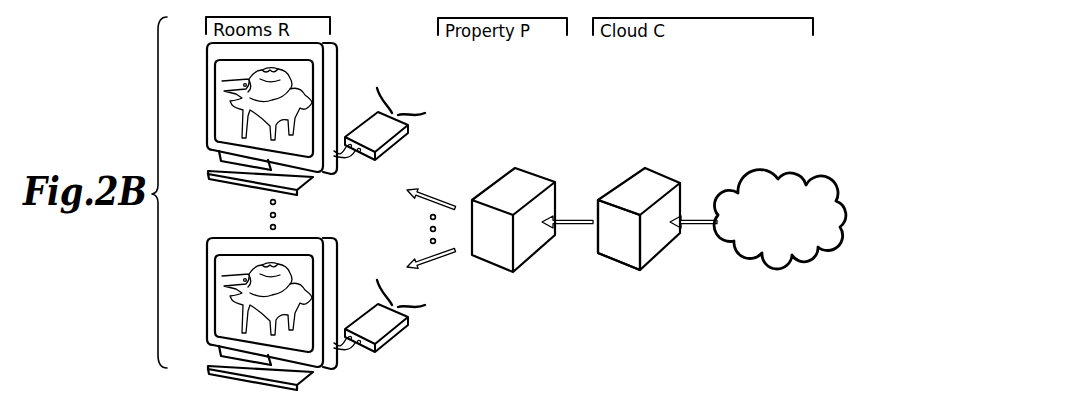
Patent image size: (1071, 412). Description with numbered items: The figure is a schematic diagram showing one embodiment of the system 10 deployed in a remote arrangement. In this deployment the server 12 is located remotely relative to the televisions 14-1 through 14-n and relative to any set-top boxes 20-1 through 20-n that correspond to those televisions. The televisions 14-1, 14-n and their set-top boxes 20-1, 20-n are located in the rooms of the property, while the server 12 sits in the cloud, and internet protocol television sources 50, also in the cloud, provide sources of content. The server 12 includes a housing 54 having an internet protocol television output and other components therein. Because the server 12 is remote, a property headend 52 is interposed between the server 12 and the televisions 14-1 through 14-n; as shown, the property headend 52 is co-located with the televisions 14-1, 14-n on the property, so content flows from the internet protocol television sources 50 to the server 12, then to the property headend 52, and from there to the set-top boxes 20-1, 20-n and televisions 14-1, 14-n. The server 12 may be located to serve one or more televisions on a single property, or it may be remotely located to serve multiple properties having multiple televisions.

The system 10 is at (147, 57).
The television 14-1 is at (339, 59).
The television 14-n is at (338, 250).
The set-top box 20-1 is at (390, 146).
The set-top box 20-n is at (388, 338).
The property headend 52 is at (534, 168).
The server 12 is at (663, 165).
The housing 54 is at (653, 243).
The internet protocol television sources 50 is at (787, 178).